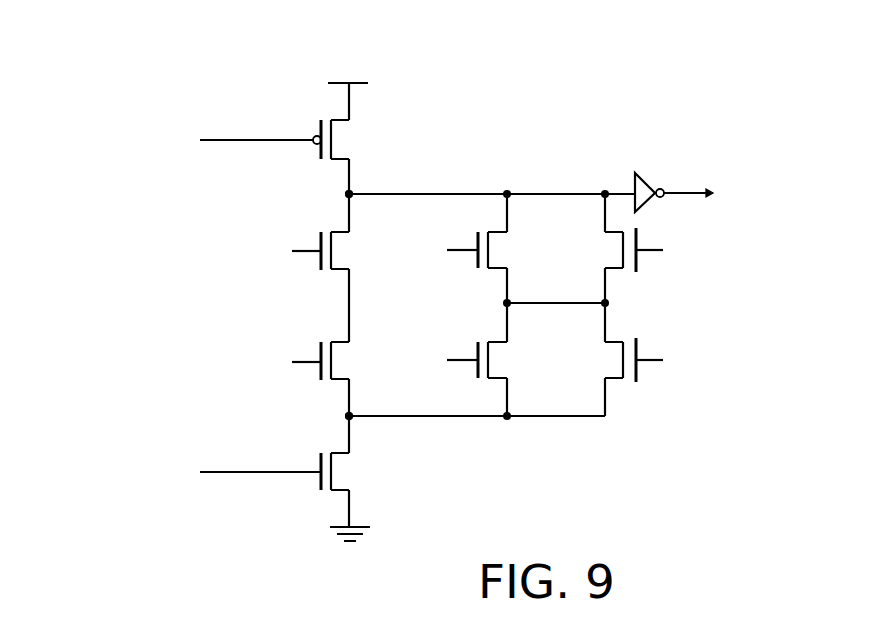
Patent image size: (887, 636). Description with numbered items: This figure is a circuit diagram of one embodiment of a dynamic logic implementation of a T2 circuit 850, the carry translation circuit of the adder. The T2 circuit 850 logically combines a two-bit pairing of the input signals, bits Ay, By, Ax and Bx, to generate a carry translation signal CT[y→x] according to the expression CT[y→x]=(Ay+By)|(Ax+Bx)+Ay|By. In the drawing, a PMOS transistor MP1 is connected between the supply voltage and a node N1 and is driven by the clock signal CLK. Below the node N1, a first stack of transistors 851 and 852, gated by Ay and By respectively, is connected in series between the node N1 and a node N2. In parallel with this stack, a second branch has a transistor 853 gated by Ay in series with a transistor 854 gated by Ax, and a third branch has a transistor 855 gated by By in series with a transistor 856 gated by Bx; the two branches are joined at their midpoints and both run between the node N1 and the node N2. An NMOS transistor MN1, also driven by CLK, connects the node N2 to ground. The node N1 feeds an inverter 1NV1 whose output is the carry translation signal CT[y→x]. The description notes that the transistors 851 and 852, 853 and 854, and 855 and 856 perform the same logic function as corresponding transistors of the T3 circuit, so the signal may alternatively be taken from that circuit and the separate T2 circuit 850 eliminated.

The T2 circuit 850 is at (172, 50).
The PMOS precharge transistor MP1 is at (344, 140).
The node N1 is at (353, 185).
The transistor 851 is at (345, 250).
The transistor 852 is at (345, 362).
The transistor 853 is at (505, 250).
The transistor 854 is at (505, 355).
The transistor 855 is at (605, 245).
The transistor 856 is at (605, 350).
The node N2 is at (340, 415).
The NMOS evaluate transistor MN1 is at (348, 472).
The inverter 1NV1 is at (650, 180).